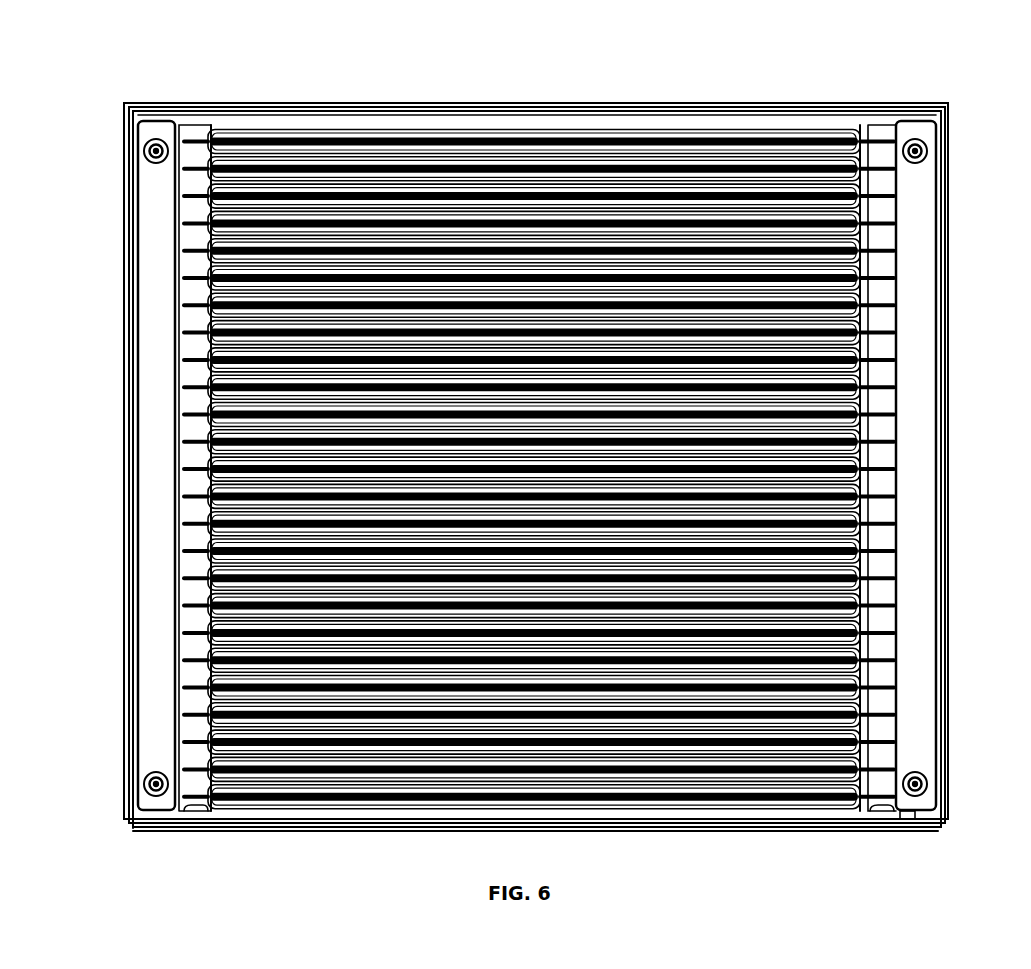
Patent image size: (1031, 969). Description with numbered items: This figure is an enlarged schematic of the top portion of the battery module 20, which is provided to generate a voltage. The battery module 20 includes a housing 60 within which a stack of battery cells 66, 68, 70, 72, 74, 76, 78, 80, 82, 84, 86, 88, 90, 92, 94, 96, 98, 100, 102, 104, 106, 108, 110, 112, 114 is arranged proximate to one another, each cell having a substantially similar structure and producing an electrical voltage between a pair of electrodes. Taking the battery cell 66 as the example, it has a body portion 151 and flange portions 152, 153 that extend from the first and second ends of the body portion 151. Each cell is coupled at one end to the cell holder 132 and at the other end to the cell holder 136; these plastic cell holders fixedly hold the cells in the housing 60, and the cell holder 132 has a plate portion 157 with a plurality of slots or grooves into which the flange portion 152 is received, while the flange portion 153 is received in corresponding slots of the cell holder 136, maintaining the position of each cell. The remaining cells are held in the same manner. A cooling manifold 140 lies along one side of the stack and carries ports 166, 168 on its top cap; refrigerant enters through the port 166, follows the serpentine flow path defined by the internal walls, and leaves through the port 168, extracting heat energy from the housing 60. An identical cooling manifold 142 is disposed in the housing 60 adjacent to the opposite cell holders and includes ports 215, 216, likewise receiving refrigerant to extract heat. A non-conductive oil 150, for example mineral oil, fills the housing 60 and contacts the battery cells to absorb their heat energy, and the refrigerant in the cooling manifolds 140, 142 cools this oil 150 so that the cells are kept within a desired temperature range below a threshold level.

The battery module 20 is at (533, 468).
The housing 60 is at (536, 473).
The battery cell 66 is at (930, 811).
The battery cell 68 is at (587, 769).
The battery cell 70 is at (587, 742).
The battery cell 72 is at (587, 715).
The battery cell 74 is at (587, 688).
The battery cell 76 is at (587, 660).
The battery cell 78 is at (587, 633).
The battery cell 80 is at (587, 606).
The battery cell 82 is at (587, 578).
The battery cell 84 is at (587, 551).
The battery cell 86 is at (587, 524).
The battery cell 88 is at (587, 496).
The battery cell 90 is at (587, 469).
The battery cell 92 is at (587, 442).
The battery cell 94 is at (587, 415).
The battery cell 96 is at (587, 387).
The battery cell 98 is at (587, 360).
The battery cell 100 is at (594, 333).
The battery cell 102 is at (594, 305).
The battery cell 104 is at (594, 278).
The battery cell 106 is at (594, 251).
The battery cell 108 is at (594, 223).
The battery cell 110 is at (594, 196).
The battery cell 112 is at (594, 169).
The battery cell 114 is at (893, 131).
The cell holder 132 is at (872, 798).
The cell holder 136 is at (180, 799).
The cooling manifold 140 is at (900, 801).
The cooling manifold 142 is at (122, 816).
The non-conductive oil 150 is at (275, 806).
The body portion 151 is at (683, 796).
The flange portion 152 is at (836, 816).
The flange portion 153 is at (236, 803).
The plate portion 157 is at (872, 123).
The port 166 is at (919, 776).
The port 168 is at (919, 143).
The port 215 is at (136, 776).
The port 216 is at (136, 143).